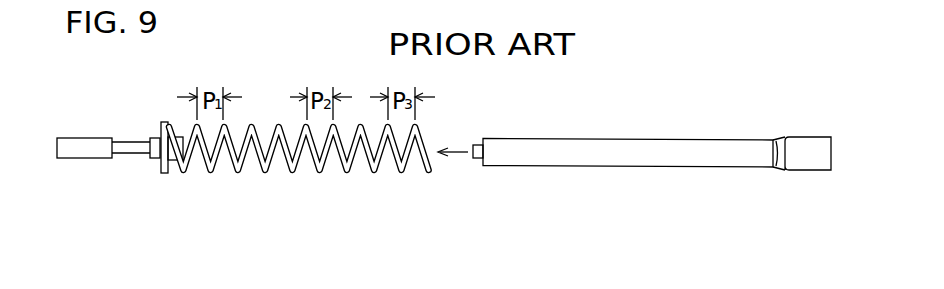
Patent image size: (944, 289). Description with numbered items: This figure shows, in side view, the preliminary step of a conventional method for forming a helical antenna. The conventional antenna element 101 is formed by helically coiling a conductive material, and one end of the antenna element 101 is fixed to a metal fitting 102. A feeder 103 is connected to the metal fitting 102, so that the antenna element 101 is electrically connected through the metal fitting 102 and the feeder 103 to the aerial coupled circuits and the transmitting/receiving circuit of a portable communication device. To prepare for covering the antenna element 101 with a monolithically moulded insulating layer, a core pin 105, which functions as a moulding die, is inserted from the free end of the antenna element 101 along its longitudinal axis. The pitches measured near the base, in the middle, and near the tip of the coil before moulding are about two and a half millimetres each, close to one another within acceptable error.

The antenna element 101 is at (367, 170).
The metal fitting 102 is at (172, 167).
The feeder 103 is at (92, 148).
The core pin 105 is at (597, 155).